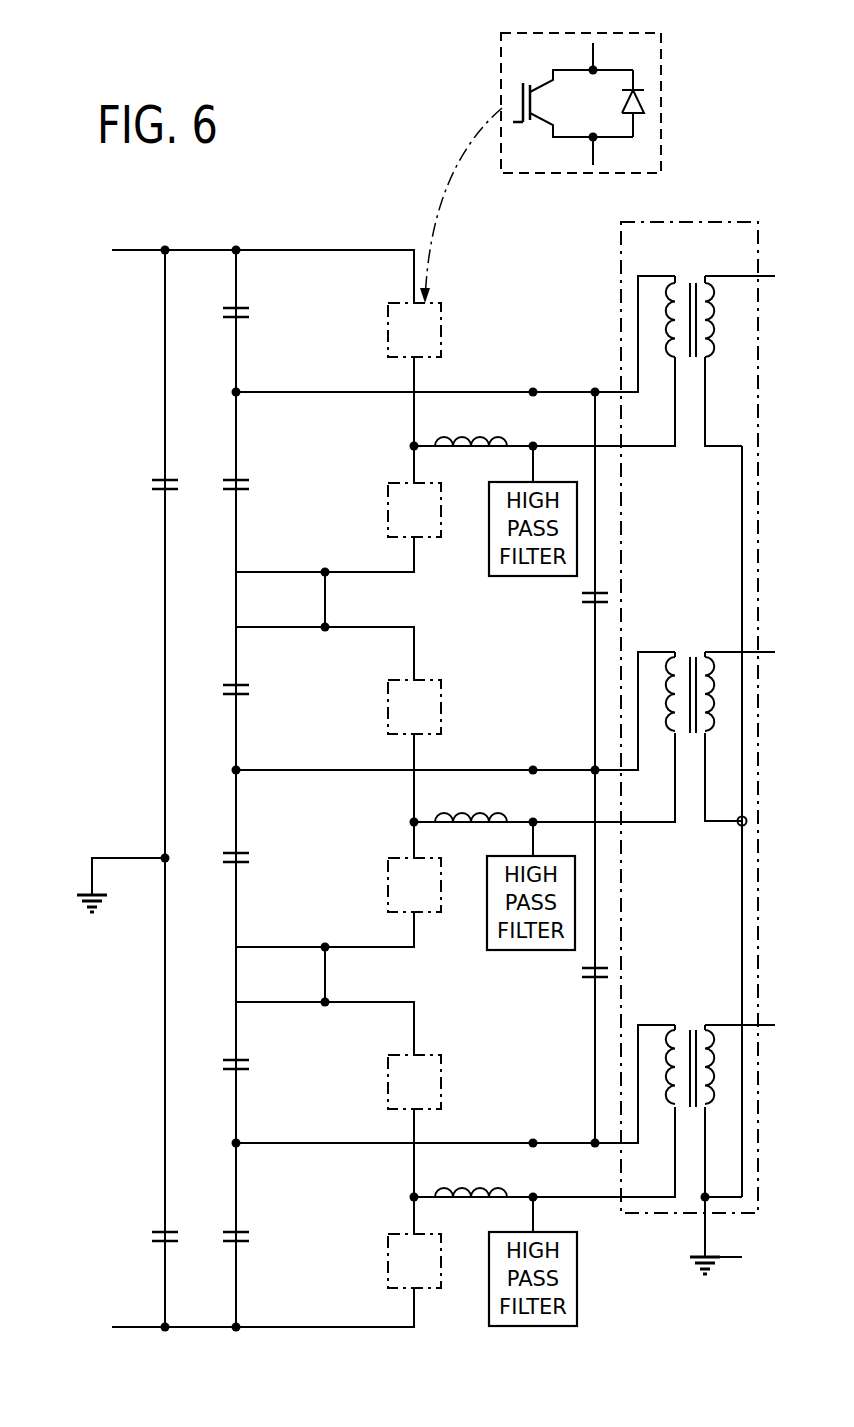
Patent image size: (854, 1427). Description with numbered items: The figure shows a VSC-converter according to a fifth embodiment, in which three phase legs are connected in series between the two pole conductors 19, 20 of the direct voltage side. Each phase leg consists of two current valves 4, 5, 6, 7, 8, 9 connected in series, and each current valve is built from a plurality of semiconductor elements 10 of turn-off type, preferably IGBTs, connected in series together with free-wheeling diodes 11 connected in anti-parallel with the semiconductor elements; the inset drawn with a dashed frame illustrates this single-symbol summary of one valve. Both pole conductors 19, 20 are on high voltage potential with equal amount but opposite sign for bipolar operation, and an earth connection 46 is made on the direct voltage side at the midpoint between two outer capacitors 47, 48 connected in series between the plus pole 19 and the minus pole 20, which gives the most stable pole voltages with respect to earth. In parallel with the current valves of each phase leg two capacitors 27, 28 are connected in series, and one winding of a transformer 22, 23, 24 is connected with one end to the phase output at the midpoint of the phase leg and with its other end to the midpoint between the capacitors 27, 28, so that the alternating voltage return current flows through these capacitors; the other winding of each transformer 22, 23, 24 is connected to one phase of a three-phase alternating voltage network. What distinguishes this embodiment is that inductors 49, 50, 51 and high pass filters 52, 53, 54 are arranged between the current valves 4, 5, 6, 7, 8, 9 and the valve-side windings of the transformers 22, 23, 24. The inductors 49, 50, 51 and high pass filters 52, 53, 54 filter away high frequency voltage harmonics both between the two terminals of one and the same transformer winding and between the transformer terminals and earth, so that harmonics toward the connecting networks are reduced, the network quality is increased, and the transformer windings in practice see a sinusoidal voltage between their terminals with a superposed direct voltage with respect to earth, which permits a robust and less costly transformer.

The current valve 4 is at (396, 300).
The current valve 5 is at (396, 480).
The current valve 6 is at (396, 677).
The current valve 7 is at (396, 855).
The current valve 8 is at (396, 1052).
The current valve 9 is at (396, 1231).
The semiconductor element of turn-off type 10 is at (522, 95).
The free-wheeling diode 11 is at (660, 103).
The pole conductor 19 is at (136, 250).
The pole conductor 20 is at (134, 1330).
The transformer 22 is at (690, 276).
The transformer 23 is at (688, 650).
The transformer 24 is at (688, 1025).
The capacitor 27 is at (242, 310).
The capacitor 28 is at (242, 482).
The earth connection 46 is at (102, 858).
The capacitor 47 is at (155, 480).
The capacitor 48 is at (155, 1232).
The inductor 49 is at (478, 438).
The inductor 50 is at (478, 814).
The inductor 51 is at (478, 1189).
The high pass filter 52 is at (489, 564).
The high pass filter 53 is at (487, 934).
The high pass filter 54 is at (577, 1296).